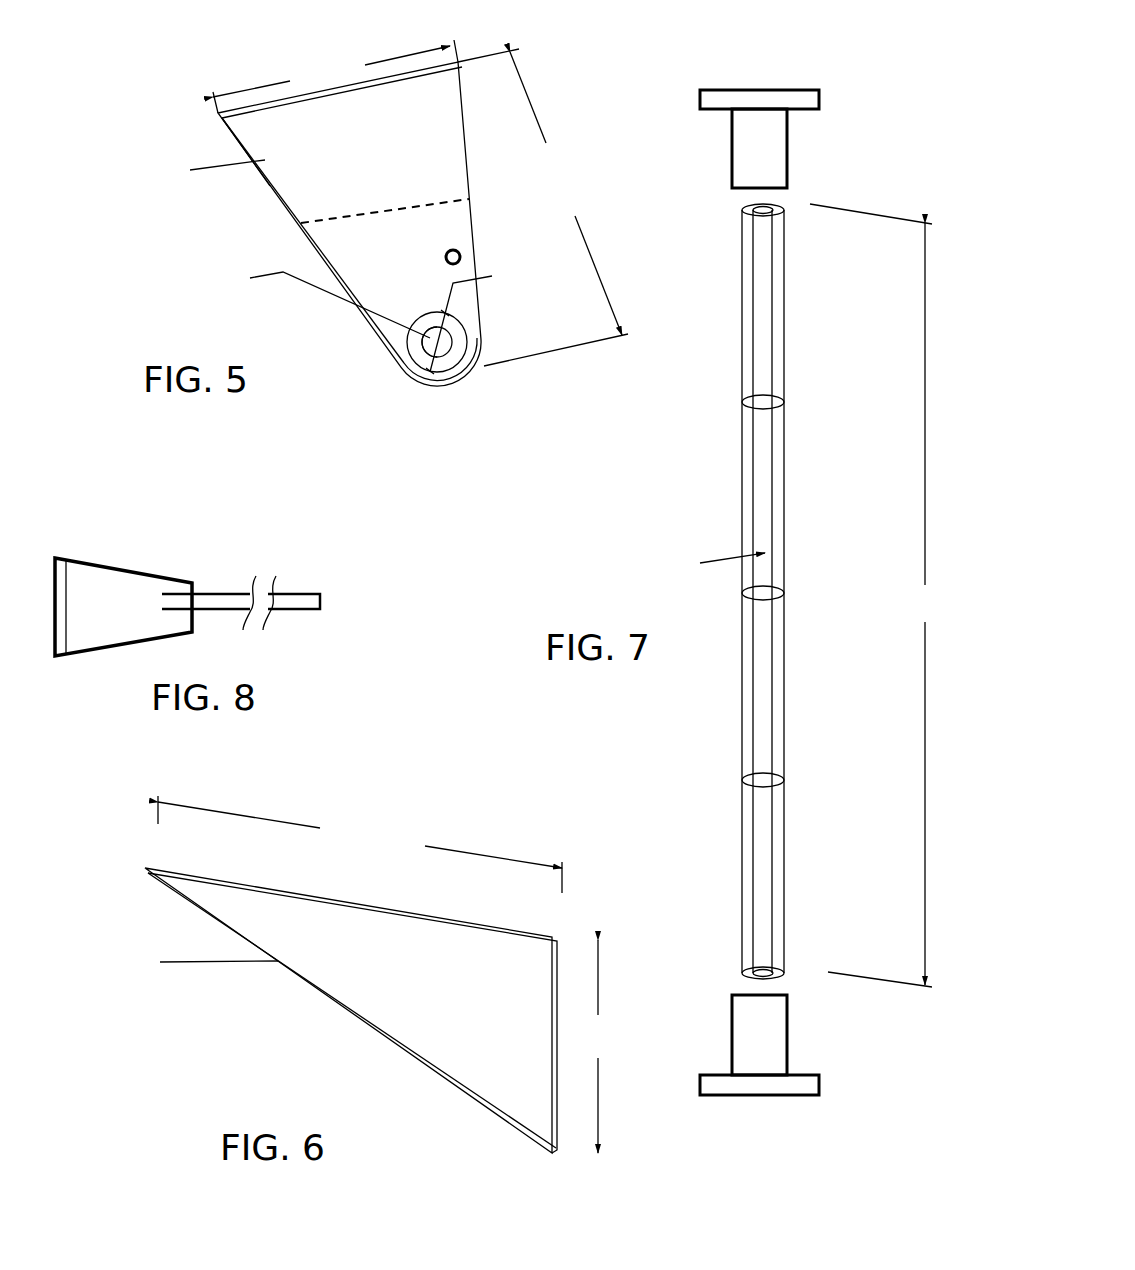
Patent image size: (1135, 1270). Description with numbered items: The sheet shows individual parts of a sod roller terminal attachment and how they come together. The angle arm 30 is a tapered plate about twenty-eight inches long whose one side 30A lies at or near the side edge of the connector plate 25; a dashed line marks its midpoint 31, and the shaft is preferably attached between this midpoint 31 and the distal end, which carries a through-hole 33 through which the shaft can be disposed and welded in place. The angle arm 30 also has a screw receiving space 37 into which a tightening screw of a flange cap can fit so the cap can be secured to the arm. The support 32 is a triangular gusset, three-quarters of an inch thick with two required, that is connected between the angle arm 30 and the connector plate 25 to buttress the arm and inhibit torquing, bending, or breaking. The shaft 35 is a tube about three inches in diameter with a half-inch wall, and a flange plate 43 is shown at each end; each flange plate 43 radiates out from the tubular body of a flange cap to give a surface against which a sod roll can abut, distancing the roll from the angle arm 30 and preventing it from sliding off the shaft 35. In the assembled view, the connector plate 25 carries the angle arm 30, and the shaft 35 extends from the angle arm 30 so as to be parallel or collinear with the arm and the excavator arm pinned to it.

In FIG. 8, the connector plate 25 is at (62, 570).
In FIG. 5, the angle arm 30 is at (297, 220).
In FIG. 8, the angle arm 30 is at (117, 583).
In FIG. 5, the one side of the angle arm 30A is at (293, 187).
In FIG. 5, the midpoint 31 is at (400, 208).
In FIG. 6, the support 32 is at (360, 996).
In FIG. 5, the through-hole 33 is at (427, 345).
In FIG. 8, the shaft 35 is at (302, 598).
In FIG. 7, the shaft 35 is at (747, 432).
In FIG. 5, the screw receiving space 37 is at (459, 252).
In FIG. 7, the flange plate 43 is at (768, 92).